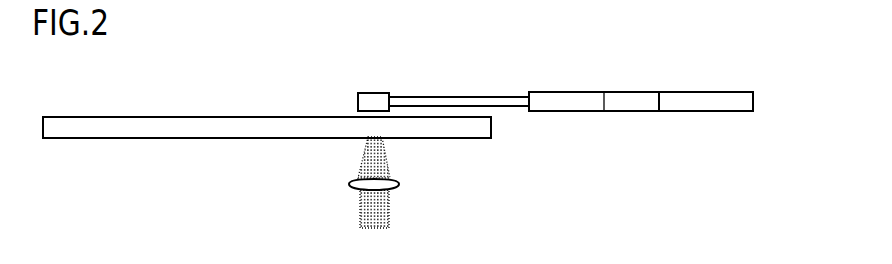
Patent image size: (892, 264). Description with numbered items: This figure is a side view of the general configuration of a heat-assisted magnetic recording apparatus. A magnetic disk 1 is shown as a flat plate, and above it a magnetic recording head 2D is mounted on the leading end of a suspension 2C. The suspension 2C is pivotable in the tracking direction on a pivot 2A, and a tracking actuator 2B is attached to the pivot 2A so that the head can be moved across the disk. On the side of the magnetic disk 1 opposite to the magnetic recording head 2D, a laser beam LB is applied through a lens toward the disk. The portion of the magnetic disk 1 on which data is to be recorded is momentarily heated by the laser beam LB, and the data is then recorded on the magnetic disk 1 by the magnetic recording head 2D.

The magnetic disk 1 is at (106, 117).
The pivot 2A is at (633, 101).
The tracking actuator 2B is at (707, 100).
The suspension 2C is at (454, 100).
The magnetic recording head 2D is at (374, 100).
The laser beam LB is at (378, 162).